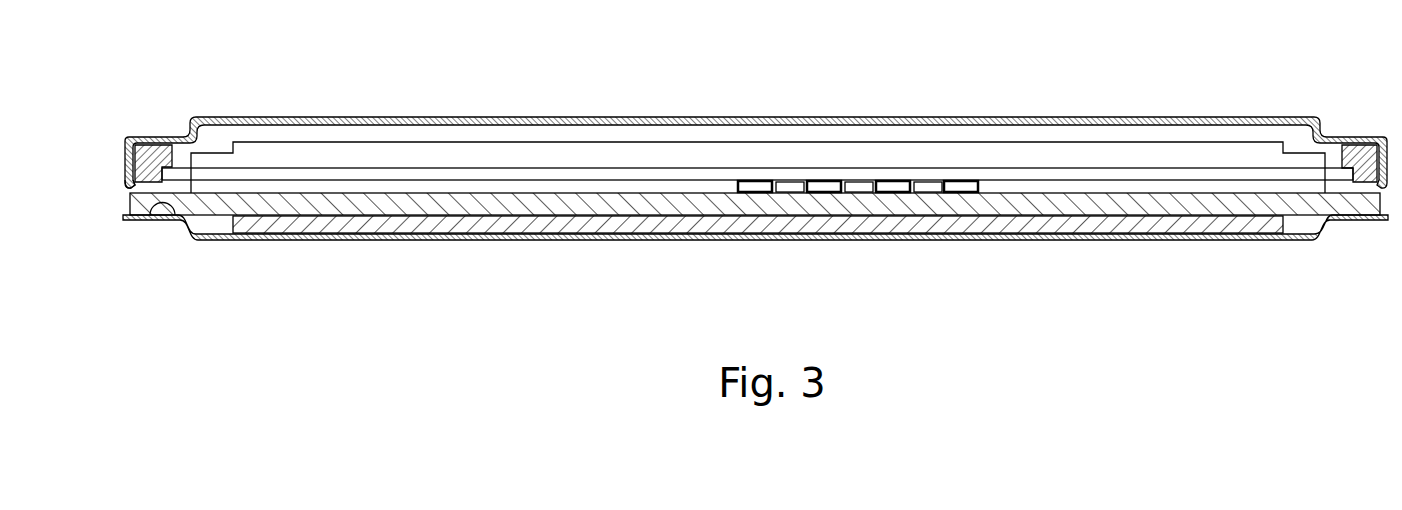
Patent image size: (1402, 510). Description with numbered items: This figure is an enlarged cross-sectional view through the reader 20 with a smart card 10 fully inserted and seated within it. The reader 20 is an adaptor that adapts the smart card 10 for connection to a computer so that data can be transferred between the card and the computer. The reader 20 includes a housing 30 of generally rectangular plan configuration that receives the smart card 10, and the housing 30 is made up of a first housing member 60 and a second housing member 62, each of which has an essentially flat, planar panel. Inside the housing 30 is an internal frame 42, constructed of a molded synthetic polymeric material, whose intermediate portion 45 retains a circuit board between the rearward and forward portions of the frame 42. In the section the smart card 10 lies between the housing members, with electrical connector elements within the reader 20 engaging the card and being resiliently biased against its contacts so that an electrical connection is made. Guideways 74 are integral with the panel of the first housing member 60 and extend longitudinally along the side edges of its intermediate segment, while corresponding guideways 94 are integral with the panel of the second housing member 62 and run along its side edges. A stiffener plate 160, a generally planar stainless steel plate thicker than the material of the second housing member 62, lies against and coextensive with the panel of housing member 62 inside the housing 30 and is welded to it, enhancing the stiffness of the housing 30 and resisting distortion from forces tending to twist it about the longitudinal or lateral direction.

The smart card 10 is at (323, 215).
The reader 20 is at (428, 117).
The housing 30 is at (745, 117).
The internal frame 42 is at (152, 140).
The intermediate portion 45 is at (1245, 168).
The first housing member 60 is at (613, 117).
The second housing member 62 is at (597, 240).
The guideways 74 is at (128, 183).
The guideways 94 is at (173, 222).
The stiffener plate 160 is at (520, 224).